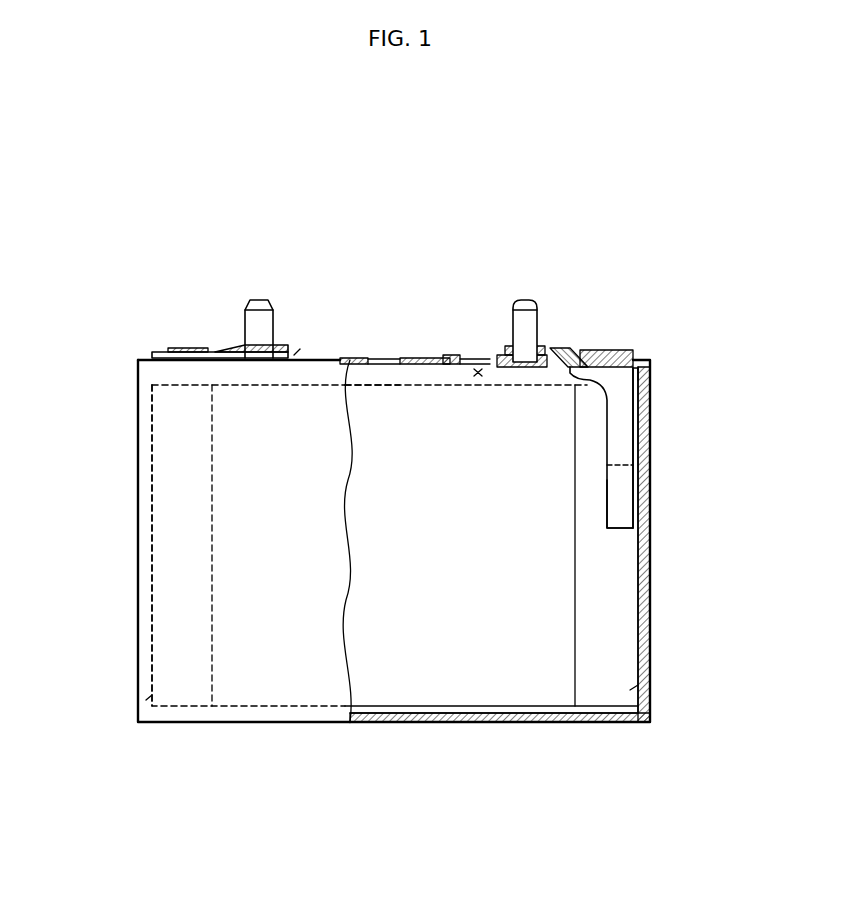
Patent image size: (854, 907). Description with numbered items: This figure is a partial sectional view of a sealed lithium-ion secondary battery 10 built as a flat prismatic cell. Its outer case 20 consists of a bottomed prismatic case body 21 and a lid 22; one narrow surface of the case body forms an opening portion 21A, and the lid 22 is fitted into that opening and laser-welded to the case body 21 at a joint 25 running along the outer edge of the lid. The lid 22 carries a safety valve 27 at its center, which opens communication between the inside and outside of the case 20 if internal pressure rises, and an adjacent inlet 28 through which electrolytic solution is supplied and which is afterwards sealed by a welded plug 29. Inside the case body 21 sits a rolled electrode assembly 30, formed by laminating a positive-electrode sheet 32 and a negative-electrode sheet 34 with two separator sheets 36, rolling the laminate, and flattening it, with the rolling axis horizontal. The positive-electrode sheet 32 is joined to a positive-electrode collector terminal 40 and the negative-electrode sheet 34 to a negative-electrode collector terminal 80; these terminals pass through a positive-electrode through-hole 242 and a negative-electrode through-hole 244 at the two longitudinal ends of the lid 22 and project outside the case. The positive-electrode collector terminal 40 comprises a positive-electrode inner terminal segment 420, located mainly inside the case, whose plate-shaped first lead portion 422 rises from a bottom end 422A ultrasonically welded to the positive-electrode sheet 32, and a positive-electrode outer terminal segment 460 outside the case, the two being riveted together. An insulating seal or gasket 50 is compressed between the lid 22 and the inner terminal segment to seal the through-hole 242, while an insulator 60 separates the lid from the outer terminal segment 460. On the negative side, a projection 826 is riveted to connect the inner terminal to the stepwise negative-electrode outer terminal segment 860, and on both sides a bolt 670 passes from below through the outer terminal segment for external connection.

The lithium-ion secondary battery 10 is at (108, 226).
The outer case 20 is at (136, 441).
The case body 21 is at (645, 578).
The opening portion 21A is at (478, 371).
The lid 22 is at (355, 358).
The joint 25 is at (649, 360).
The safety valve 27 is at (397, 386).
The inlet 28 is at (455, 366).
The plug 29 is at (440, 357).
The rolled electrode assembly 30 is at (500, 690).
The positive-electrode sheet 32 is at (640, 685).
The negative-electrode sheet 34 is at (150, 695).
The separator sheets 36 is at (408, 686).
The positive-electrode collector terminal 40 is at (598, 396).
The insulating seal (gasket) 50 is at (630, 379).
The insulator 60 is at (499, 348).
The negative-electrode collector terminal 80 is at (232, 283).
The positive-electrode through-hole 242 is at (598, 350).
The negative-electrode through-hole 244 is at (178, 386).
The positive-electrode inner terminal segment 420 is at (646, 392).
The first lead portion 422 is at (628, 448).
The bottom end 422A is at (628, 518).
The positive-electrode outer terminal segment 460 is at (553, 348).
The bolt 670 is at (515, 298).
The projection 826 is at (187, 347).
The negative-electrode outer terminal segment 860 is at (233, 345).